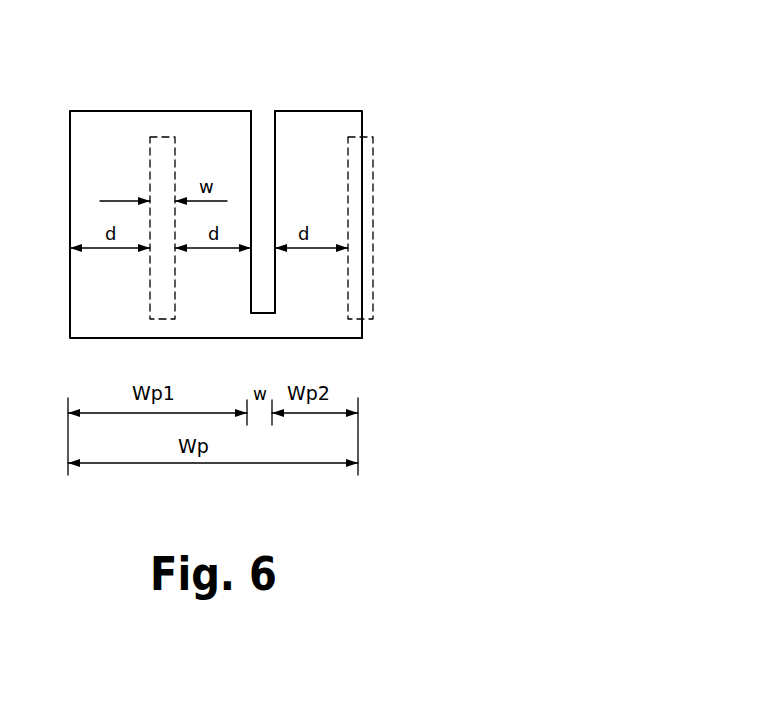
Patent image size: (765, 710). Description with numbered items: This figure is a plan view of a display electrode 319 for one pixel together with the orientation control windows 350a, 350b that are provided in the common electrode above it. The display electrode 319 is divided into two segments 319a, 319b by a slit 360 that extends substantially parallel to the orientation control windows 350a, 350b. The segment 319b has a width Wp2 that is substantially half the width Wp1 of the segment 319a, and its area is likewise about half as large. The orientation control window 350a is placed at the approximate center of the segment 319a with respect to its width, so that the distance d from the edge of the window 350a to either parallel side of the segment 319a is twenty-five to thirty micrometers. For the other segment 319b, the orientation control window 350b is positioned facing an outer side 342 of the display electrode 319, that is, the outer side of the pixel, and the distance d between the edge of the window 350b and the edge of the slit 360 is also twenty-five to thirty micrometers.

The display electrode 319 is at (255, 235).
The segment 319a is at (102, 111).
The segment 319b is at (312, 111).
The outer side 342 is at (408, 335).
The orientation control window 350a is at (152, 173).
The orientation control window 350b is at (373, 186).
The slit 360 is at (251, 158).